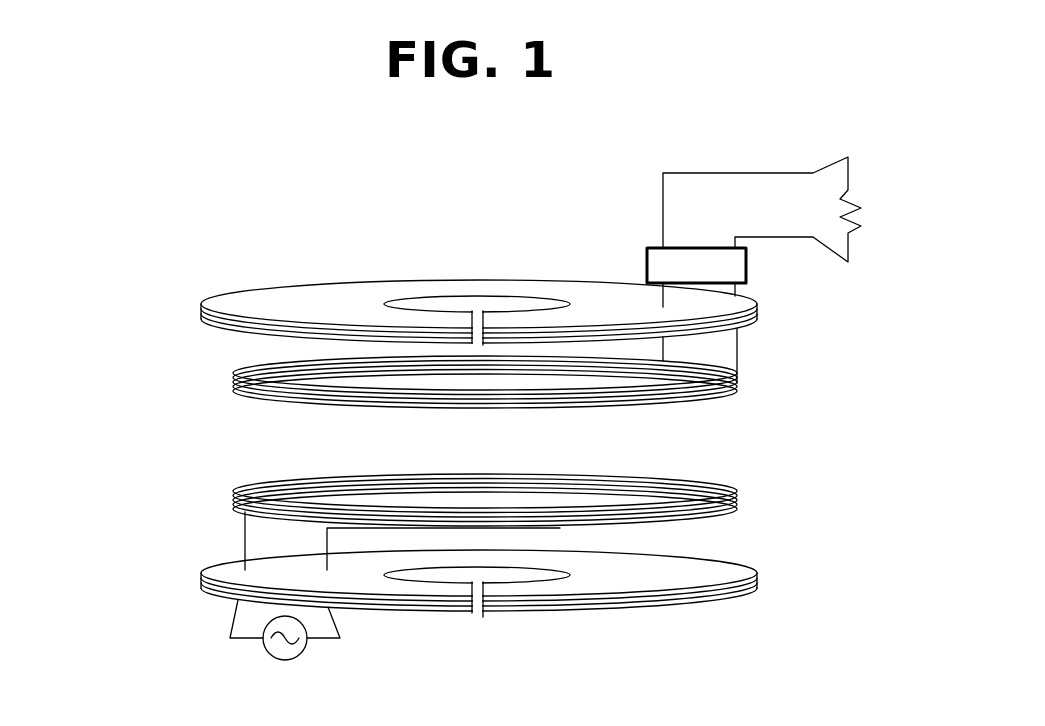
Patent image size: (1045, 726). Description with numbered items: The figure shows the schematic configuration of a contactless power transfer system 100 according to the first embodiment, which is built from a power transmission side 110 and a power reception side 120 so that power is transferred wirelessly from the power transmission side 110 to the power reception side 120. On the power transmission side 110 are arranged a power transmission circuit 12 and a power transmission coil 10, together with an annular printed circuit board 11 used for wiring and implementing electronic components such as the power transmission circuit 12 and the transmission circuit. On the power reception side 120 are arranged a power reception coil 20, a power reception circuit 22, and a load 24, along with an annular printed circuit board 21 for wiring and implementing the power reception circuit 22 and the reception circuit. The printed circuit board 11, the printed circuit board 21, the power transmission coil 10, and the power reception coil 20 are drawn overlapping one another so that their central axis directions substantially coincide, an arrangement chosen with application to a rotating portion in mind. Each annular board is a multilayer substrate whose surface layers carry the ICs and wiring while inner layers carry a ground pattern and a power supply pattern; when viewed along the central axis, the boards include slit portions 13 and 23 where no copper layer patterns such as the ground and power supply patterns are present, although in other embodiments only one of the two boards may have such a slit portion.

The contactless power transfer system 100 is at (105, 229).
The power transmission side 110 is at (177, 467).
The power reception side 120 is at (177, 229).
The power transmission coil 10 is at (808, 544).
The printed circuit board 11 is at (705, 605).
The power transmission circuit 12 is at (272, 655).
The slit portion 13 is at (473, 615).
The power reception coil 20 is at (808, 327).
The printed circuit board 21 is at (742, 330).
The power reception circuit 22 is at (746, 268).
The slit portion 23 is at (480, 301).
The load 24 is at (858, 195).